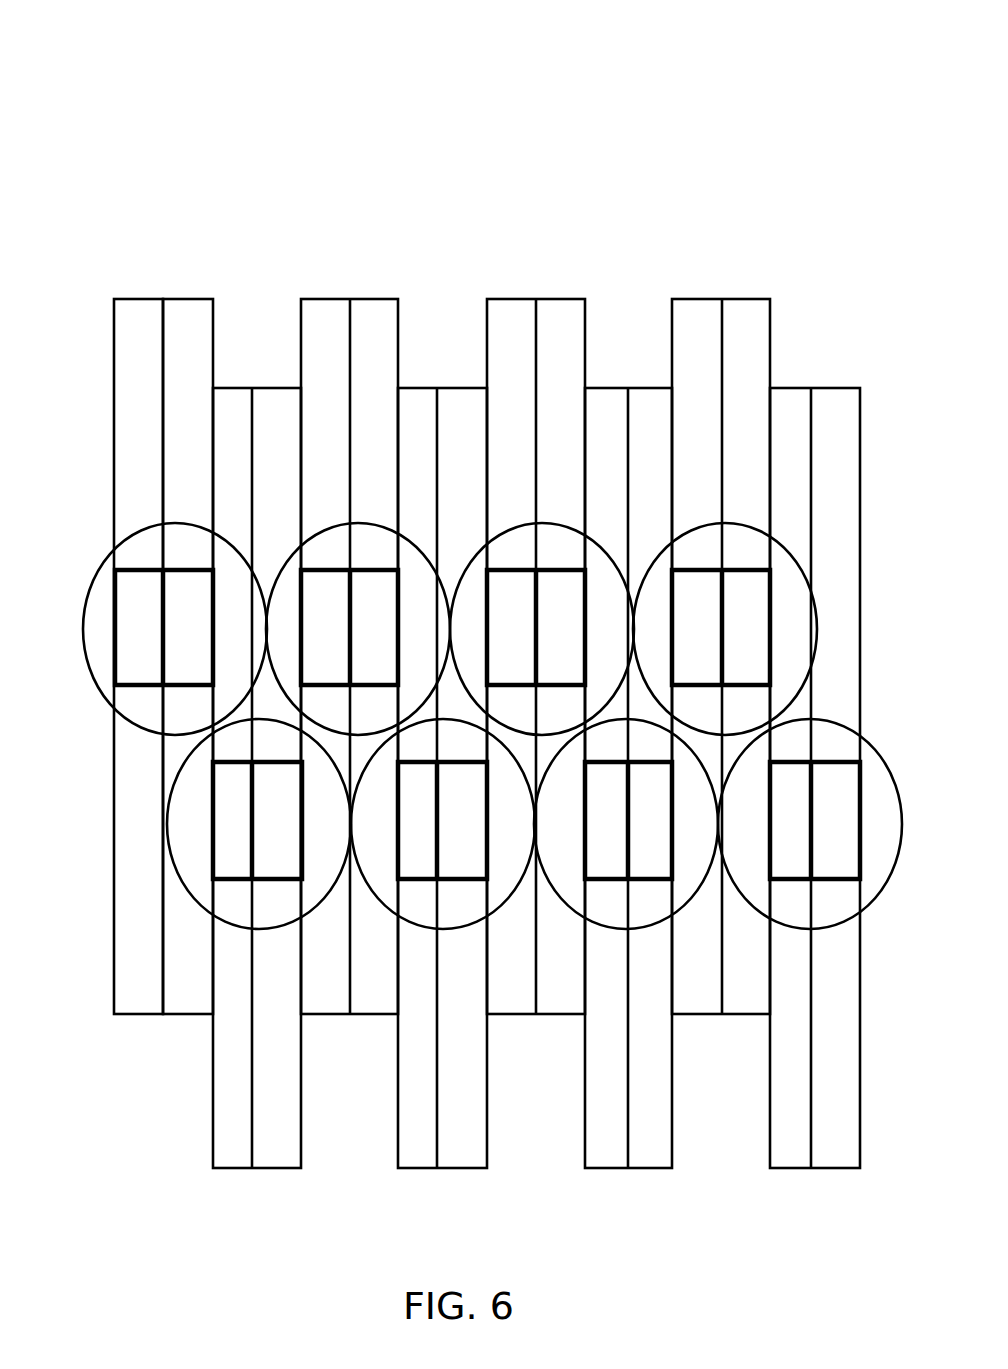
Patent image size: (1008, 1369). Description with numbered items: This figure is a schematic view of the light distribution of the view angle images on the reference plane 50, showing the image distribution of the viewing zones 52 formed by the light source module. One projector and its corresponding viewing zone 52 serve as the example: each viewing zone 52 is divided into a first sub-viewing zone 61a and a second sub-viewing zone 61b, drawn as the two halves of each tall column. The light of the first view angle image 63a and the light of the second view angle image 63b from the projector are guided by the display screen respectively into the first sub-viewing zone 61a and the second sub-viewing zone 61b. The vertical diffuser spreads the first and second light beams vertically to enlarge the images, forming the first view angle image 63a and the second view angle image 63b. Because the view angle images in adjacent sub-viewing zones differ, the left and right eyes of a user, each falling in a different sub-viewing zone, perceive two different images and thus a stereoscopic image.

The reference plane 50 is at (345, 82).
The viewing zone 52 is at (261, 115).
The first sub-viewing zone 61a is at (143, 323).
The second sub-viewing zone 61b is at (184, 310).
The first view angle image 63a is at (142, 567).
The second view angle image 63b is at (176, 634).